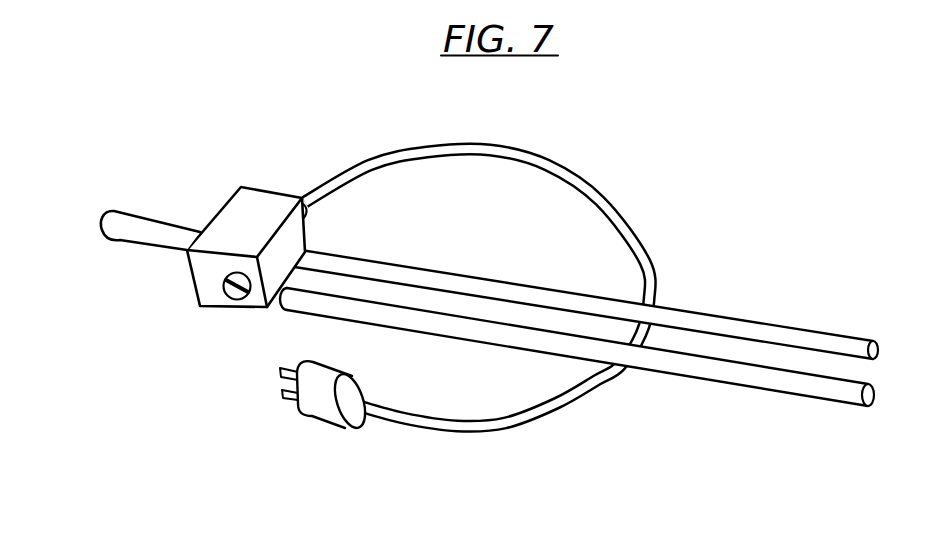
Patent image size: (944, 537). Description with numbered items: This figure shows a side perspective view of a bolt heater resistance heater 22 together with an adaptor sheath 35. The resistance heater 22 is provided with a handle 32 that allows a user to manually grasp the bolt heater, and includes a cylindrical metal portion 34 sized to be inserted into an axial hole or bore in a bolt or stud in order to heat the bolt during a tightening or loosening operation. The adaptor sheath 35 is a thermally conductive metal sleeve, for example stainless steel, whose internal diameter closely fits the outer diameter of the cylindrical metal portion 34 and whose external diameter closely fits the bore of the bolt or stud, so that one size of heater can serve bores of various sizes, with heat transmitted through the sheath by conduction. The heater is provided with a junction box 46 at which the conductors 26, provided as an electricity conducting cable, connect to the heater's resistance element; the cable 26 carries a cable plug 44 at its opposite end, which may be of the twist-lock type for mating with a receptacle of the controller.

The resistance heater 22 is at (215, 133).
The conductors 26 is at (603, 197).
The handle 32 is at (125, 250).
The cylindrical metal portion 34 is at (393, 266).
The adaptor sheath 35 is at (657, 358).
The cable plug 44 is at (325, 424).
The junction box 46 is at (213, 298).